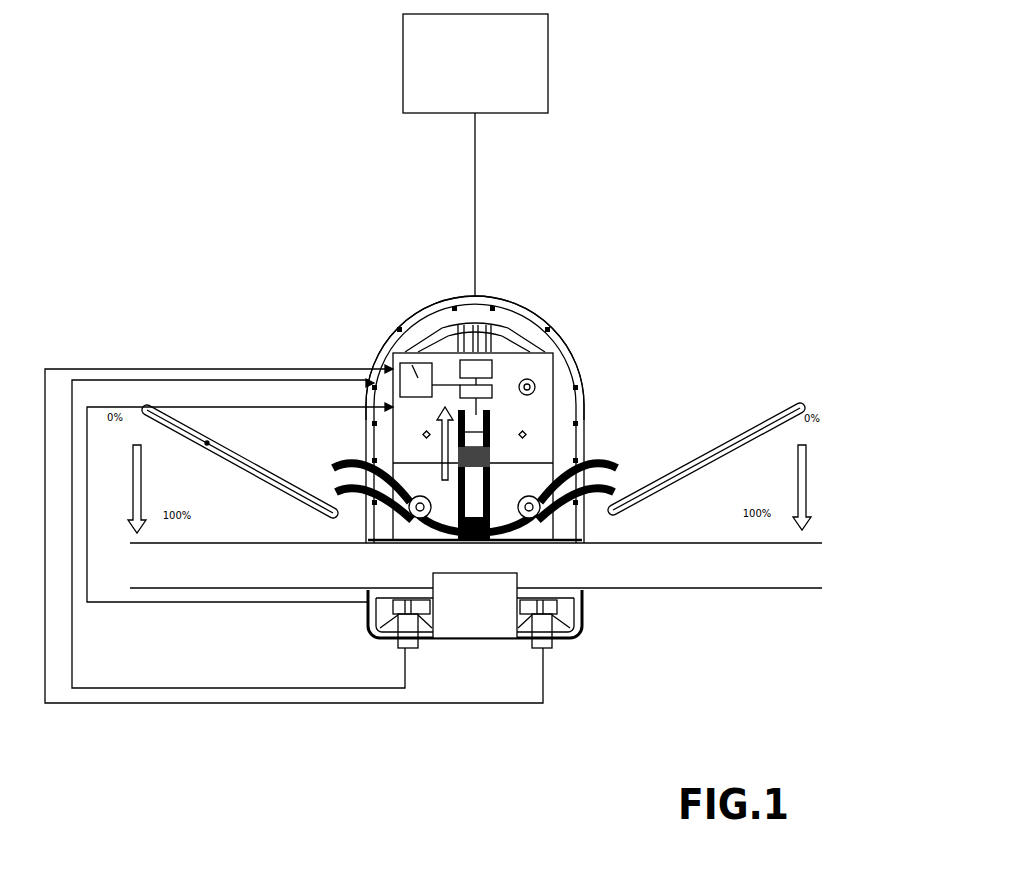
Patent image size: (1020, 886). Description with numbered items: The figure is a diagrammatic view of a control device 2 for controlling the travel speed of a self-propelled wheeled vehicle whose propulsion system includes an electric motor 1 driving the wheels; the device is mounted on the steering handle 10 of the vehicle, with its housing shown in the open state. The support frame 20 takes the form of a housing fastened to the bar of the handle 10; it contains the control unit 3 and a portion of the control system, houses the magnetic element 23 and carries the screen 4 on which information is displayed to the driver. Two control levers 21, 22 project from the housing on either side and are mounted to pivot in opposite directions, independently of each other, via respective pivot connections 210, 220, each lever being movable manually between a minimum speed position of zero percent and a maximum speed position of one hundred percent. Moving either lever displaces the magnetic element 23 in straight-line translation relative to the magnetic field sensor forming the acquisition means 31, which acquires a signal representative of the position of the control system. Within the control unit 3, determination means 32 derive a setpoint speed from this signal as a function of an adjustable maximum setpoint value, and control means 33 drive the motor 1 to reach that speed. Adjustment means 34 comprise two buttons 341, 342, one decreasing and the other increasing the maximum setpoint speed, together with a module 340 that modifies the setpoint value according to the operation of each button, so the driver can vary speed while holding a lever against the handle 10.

The electric motor 1 is at (462, 73).
The control device 2 is at (782, 352).
The control unit 3 is at (390, 432).
The screen 4 is at (468, 623).
The steering handle 10 is at (256, 574).
The support frame 20 is at (590, 385).
The control lever 21 is at (207, 443).
The control lever 22 is at (630, 505).
The magnetic element 23 is at (490, 446).
The acquisition means 31 is at (465, 436).
The determination means 32 is at (495, 388).
The control means 33 is at (494, 358).
The adjustment means 34 is at (392, 340).
The pivot connection 210 is at (408, 526).
The pivot connection 220 is at (582, 453).
The module 340 is at (416, 368).
The adjustment element 341 is at (417, 633).
The adjustment element 342 is at (548, 624).